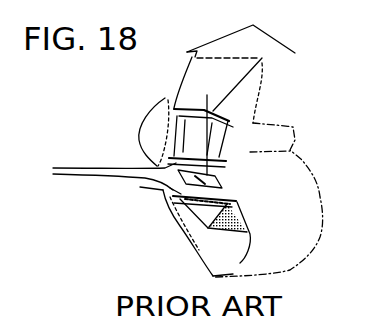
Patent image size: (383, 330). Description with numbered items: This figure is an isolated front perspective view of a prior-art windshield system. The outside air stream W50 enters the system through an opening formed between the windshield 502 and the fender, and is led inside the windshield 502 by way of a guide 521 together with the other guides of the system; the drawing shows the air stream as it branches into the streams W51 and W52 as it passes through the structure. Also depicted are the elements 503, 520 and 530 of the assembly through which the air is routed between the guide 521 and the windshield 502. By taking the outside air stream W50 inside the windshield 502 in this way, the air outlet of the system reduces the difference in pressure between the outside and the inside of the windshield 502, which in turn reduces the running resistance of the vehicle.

The windshield 502 is at (270, 125).
The coil 503 is at (254, 214).
The bobbin 520 is at (231, 126).
The guide 521 is at (173, 96).
The terminal 530 is at (222, 167).
The outside air stream W50 is at (90, 176).
The wire W51 is at (177, 211).
The wire W52 is at (295, 53).